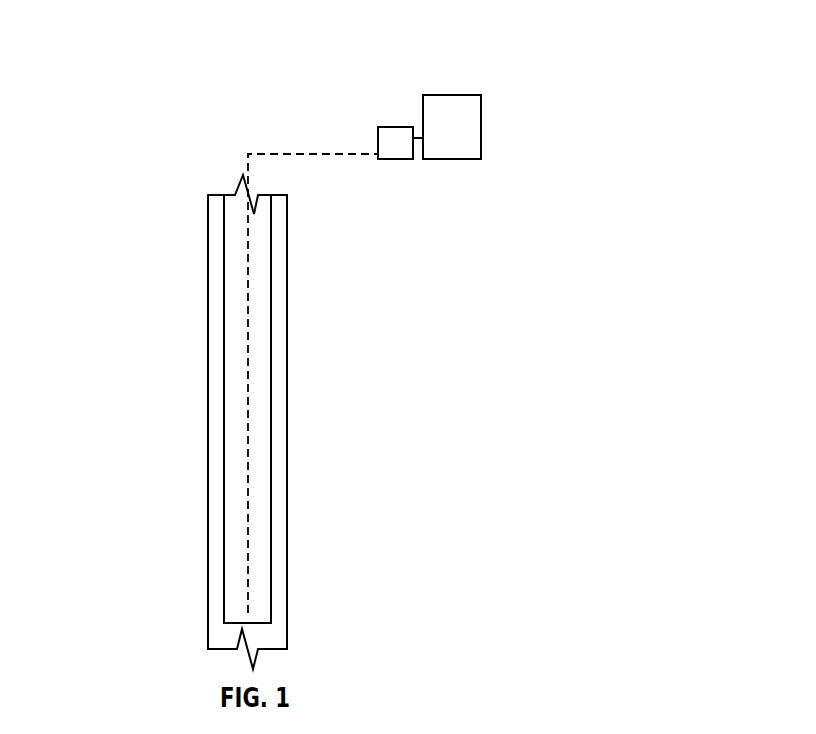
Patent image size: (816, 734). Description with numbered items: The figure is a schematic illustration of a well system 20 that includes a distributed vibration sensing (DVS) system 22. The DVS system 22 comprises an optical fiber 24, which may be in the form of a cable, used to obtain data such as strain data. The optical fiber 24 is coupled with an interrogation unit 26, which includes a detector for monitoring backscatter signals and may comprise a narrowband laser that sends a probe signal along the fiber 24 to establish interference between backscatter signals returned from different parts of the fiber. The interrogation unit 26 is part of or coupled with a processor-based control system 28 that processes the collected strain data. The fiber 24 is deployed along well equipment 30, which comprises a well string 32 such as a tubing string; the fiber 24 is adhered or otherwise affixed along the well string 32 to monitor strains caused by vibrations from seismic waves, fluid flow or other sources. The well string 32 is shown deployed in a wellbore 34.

The well system 20 is at (150, 85).
The DVS system 22 is at (393, 116).
The optical fiber 24 is at (247, 367).
The interrogation unit 26 is at (395, 160).
The processor-based control system 28 is at (482, 117).
The well equipment 30 is at (275, 440).
The well string 32 is at (224, 463).
The wellbore 34 is at (217, 311).